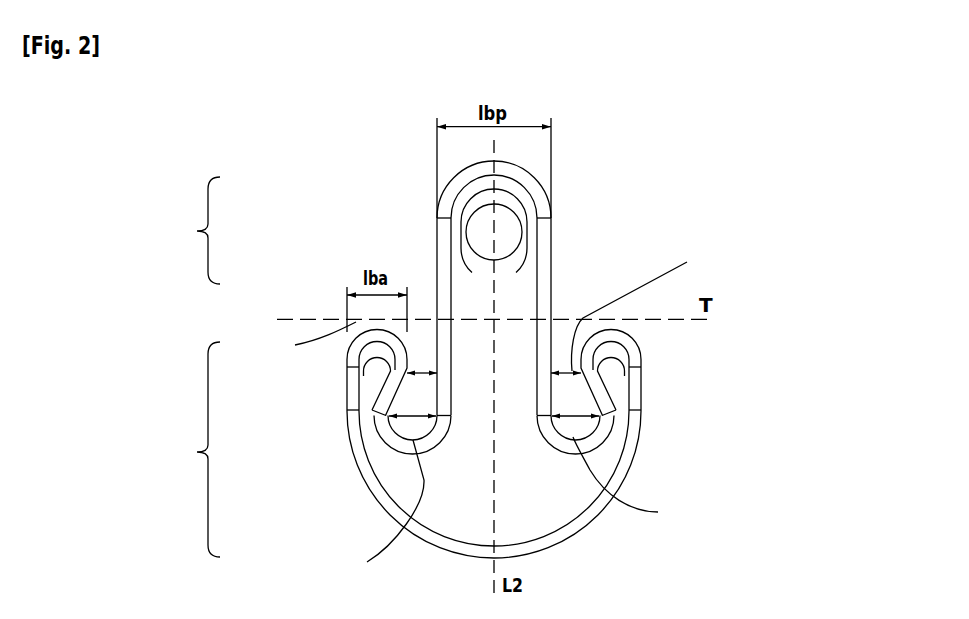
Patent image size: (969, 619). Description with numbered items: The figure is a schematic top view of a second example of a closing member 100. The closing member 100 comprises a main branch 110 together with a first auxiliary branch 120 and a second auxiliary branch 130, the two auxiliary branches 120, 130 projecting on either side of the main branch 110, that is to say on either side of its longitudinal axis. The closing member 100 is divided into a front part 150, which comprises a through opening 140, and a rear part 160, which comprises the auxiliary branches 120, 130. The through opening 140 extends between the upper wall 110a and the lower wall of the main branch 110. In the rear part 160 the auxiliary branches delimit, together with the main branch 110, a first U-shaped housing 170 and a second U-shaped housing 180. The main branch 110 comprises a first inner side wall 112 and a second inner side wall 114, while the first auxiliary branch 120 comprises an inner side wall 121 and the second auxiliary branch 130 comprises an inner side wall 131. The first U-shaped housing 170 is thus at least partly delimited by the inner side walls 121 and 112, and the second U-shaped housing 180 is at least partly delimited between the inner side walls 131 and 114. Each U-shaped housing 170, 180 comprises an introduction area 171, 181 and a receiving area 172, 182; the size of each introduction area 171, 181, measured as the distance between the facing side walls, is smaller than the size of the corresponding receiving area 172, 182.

The closing member 100 is at (795, 274).
The main branch 110 is at (521, 306).
The upper wall 110a is at (517, 371).
The first inner side wall 112 is at (437, 246).
The second inner side wall 114 is at (551, 246).
The first auxiliary branch 120 is at (365, 452).
The inner side wall 121 is at (383, 418).
The second auxiliary branch 130 is at (617, 450).
The inner side wall 131 is at (594, 392).
The through opening 140 is at (512, 208).
The front part 150 is at (191, 230).
The rear part 160 is at (191, 449).
The first U-shaped housing 170 is at (411, 416).
The introduction area 171 is at (409, 373).
The receiving area 172 is at (405, 441).
The second U-shaped housing 180 is at (580, 407).
The introduction area 181 is at (575, 372).
The receiving area 182 is at (569, 438).